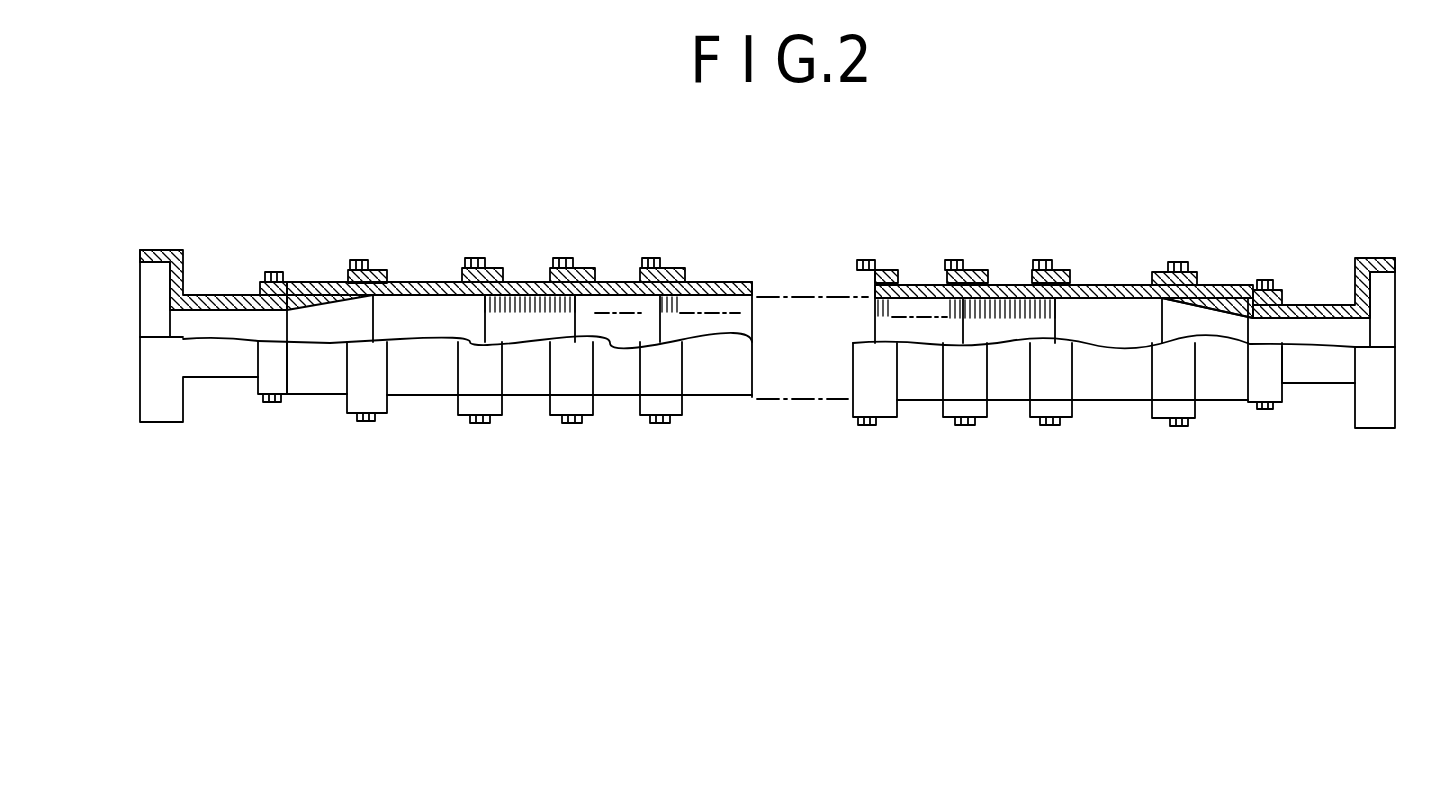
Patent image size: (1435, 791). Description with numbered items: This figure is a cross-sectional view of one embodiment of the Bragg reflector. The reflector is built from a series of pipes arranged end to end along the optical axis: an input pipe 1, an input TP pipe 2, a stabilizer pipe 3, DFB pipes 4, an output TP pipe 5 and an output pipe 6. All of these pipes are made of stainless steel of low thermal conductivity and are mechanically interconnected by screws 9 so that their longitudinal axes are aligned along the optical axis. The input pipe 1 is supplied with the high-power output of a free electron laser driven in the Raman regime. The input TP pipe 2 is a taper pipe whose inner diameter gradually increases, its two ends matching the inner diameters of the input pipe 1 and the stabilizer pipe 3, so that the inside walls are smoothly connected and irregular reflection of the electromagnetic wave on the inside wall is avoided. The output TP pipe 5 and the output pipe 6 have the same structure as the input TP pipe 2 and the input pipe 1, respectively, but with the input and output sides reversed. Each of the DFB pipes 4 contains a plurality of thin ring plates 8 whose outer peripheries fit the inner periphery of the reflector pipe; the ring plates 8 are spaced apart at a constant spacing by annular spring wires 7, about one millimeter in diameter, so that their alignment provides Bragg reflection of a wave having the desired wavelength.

The input pipe 1 is at (230, 296).
The input TP pipe 2 is at (315, 388).
The stabilizer pipe 3 is at (425, 282).
The DFB pipe 4 is at (717, 390).
The output TP pipe 5 is at (1226, 284).
The output pipe 6 is at (1318, 385).
The spring wire 7 is at (682, 312).
The ring plate 8 is at (698, 276).
The screw 9 is at (357, 262).